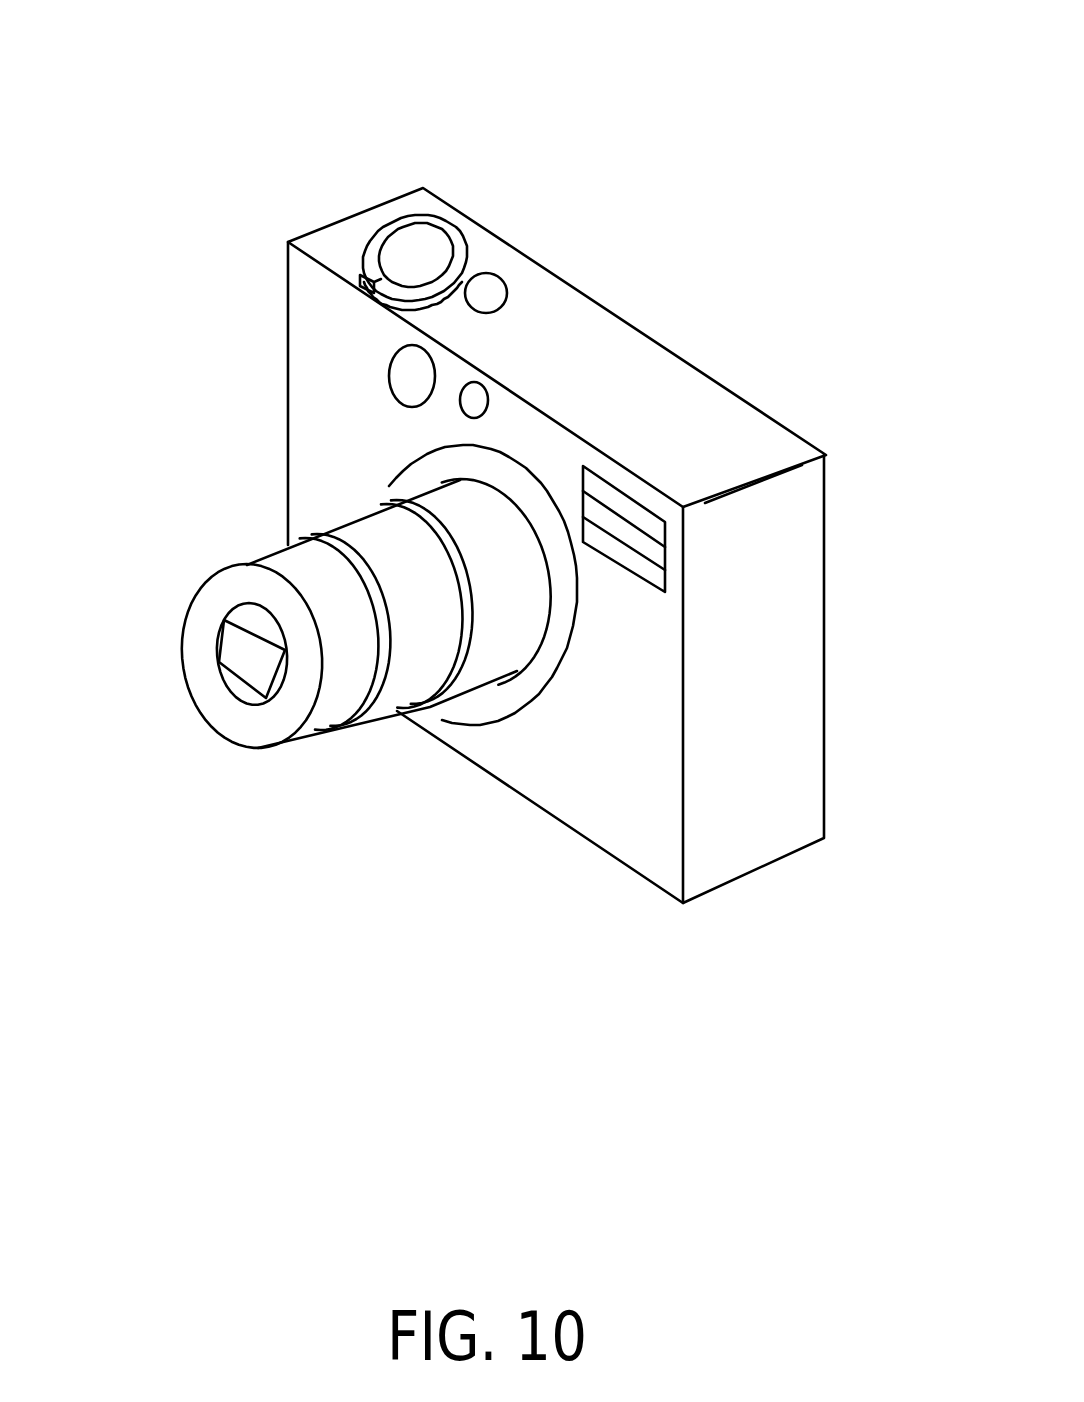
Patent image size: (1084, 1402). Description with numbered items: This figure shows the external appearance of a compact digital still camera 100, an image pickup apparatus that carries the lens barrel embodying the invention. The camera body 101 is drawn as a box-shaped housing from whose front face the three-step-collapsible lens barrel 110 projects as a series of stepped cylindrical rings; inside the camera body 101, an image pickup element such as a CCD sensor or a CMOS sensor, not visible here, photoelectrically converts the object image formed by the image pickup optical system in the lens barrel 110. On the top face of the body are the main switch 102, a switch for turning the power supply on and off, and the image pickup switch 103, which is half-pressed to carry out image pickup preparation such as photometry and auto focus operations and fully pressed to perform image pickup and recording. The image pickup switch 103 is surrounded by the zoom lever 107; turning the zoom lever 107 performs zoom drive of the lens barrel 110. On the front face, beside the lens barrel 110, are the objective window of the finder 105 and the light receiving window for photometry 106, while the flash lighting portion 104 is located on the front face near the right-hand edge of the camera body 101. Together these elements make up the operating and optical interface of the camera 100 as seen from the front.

The camera 100 is at (643, 255).
The camera body 101 is at (628, 363).
The main switch 102 is at (479, 272).
The image pickup switch 103 is at (423, 250).
The flash lighting portion 104 is at (627, 507).
The objective window of a finder 105 is at (389, 387).
The light receiving window for photometry 106 is at (473, 383).
The zoom lever 107 is at (364, 276).
The three-step-collapsible lens barrel 110 is at (282, 720).